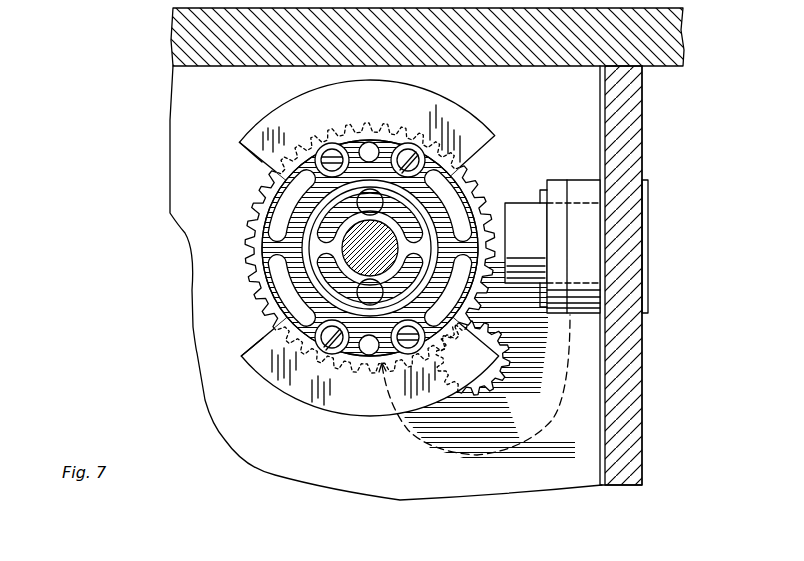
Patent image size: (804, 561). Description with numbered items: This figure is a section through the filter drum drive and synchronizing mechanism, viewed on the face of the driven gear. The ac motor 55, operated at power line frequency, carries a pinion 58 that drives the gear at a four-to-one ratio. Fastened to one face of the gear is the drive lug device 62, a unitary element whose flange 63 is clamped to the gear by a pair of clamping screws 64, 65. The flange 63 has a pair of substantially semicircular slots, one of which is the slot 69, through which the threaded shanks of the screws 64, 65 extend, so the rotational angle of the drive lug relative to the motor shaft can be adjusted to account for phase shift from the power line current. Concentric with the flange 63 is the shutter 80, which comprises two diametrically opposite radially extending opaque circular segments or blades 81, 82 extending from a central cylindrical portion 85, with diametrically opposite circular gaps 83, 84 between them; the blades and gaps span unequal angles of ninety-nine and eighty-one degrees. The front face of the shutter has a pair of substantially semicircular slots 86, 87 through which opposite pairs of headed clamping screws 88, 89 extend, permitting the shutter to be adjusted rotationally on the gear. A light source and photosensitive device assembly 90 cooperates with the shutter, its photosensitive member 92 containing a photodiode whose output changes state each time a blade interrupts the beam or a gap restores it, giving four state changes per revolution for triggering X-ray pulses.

The shutter 80 is at (212, 119).
The circular gap 83 is at (256, 152).
The headed clamping screw 88 is at (327, 142).
The clamping screw 64 is at (370, 190).
The shutter blade 81 is at (435, 97).
The circular gap 84 is at (490, 145).
The flange 63 is at (417, 210).
The semicircular slot 69 is at (418, 226).
The photosensitive member 92 is at (533, 210).
The semicircular slot 86 is at (263, 222).
The semicircular slot 87 is at (262, 282).
The drive lug device 62 is at (258, 304).
The central cylindrical portion 85 is at (270, 324).
The headed clamping screw 89 is at (330, 354).
The clamping screw 65 is at (370, 305).
The shutter blade 82 is at (363, 403).
The pinion 58 is at (512, 378).
The ac motor 55 is at (390, 455).
The light source and photosensitive device assembly 90 is at (585, 326).